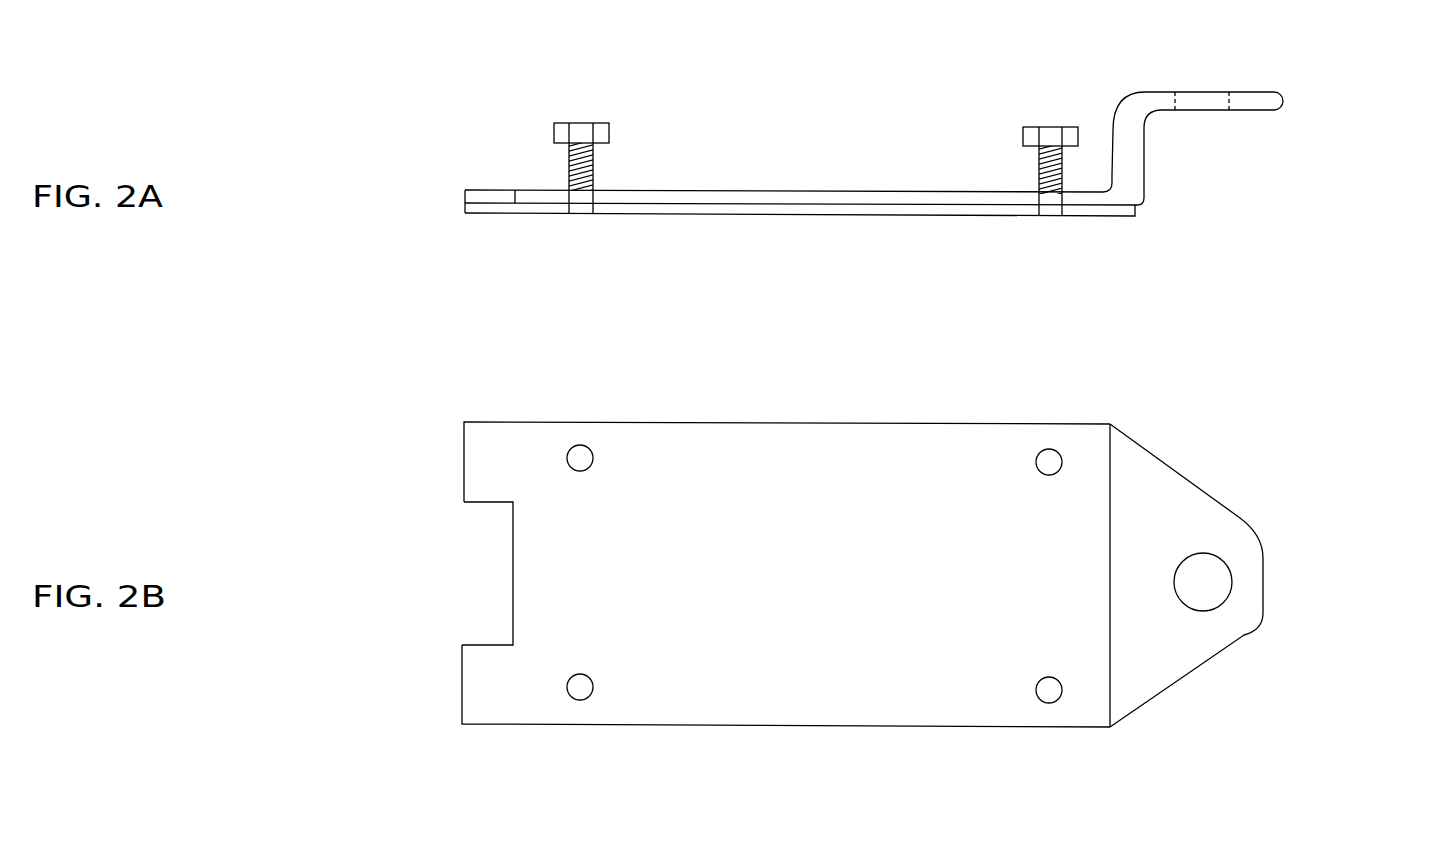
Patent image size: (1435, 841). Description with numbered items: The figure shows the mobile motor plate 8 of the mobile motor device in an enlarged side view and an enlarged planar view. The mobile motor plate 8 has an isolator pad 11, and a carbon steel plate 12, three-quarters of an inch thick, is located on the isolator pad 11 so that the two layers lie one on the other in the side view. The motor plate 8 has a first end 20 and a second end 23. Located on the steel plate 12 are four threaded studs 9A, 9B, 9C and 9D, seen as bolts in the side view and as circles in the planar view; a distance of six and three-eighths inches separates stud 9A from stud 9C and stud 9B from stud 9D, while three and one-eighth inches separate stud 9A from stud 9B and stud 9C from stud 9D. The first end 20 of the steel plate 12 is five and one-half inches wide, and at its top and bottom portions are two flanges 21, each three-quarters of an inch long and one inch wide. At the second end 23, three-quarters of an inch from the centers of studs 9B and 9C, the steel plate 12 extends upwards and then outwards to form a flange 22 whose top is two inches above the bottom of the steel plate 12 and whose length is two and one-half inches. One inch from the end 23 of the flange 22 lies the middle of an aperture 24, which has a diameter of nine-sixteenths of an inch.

In FIG. 2A, the mobile motor plate 8 is at (748, 185).
In FIG. 2B, the mobile motor plate 8 is at (688, 413).
In FIG. 2A, the threaded stud 9A is at (605, 128).
In FIG. 2B, the threaded stud 9A is at (605, 456).
In FIG. 2B, the threaded stud 9B is at (605, 684).
In FIG. 2A, the threaded stud 9C is at (1050, 138).
In FIG. 2B, the threaded stud 9C is at (1027, 458).
In FIG. 2B, the threaded stud 9D is at (1027, 686).
In FIG. 2A, the isolator pad 11 is at (905, 210).
In FIG. 2A, the carbon steel plate 12 is at (768, 198).
In FIG. 2B, the carbon steel plate 12 is at (832, 449).
In FIG. 2A, the first end 20 is at (467, 185).
In FIG. 2B, the first end 20 is at (464, 415).
In FIG. 2B, the flanges 21 is at (497, 450).
In FIG. 2A, the flange 22 is at (1155, 97).
In FIG. 2B, the flange 22 is at (1198, 517).
In FIG. 2A, the second end 23 is at (1283, 117).
In FIG. 2B, the second end 23 is at (1182, 468).
In FIG. 2A, the aperture 24 is at (1203, 102).
In FIG. 2B, the aperture 24 is at (1210, 568).